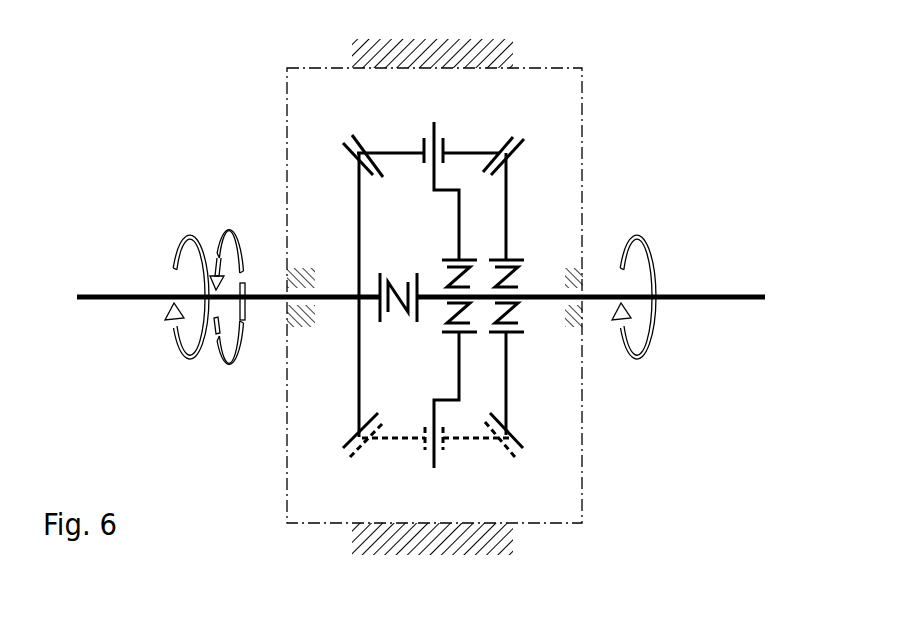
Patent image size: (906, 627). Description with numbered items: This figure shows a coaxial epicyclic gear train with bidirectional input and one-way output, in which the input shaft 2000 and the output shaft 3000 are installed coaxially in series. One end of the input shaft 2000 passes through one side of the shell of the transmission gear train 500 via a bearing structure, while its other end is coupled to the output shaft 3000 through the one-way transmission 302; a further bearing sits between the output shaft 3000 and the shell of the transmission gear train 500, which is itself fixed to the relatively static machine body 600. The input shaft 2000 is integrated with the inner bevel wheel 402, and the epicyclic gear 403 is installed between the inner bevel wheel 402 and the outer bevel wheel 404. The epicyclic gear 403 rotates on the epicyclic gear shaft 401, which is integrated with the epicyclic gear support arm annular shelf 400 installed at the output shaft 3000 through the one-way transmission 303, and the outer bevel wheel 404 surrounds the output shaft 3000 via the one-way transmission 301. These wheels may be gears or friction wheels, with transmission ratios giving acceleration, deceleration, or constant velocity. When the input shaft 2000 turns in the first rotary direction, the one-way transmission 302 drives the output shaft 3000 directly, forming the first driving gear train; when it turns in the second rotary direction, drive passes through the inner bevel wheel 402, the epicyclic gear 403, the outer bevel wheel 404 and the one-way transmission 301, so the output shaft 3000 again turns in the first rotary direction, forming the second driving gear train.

The machine body 600 is at (432, 62).
The shell of the transmission gear train 500 is at (287, 157).
The inner bevel wheel 402 is at (350, 153).
The epicyclic gear shaft 401 is at (436, 140).
The epicyclic gear 403 is at (503, 145).
The outer bevel wheel 404 is at (513, 163).
The epicyclic gear support arm annular shelf 400 is at (461, 227).
The one-way transmission 302 is at (395, 280).
The one-way transmission 303 is at (443, 323).
The one-way transmission 301 is at (515, 323).
The input shaft 2000 is at (127, 295).
The output shaft 3000 is at (700, 292).